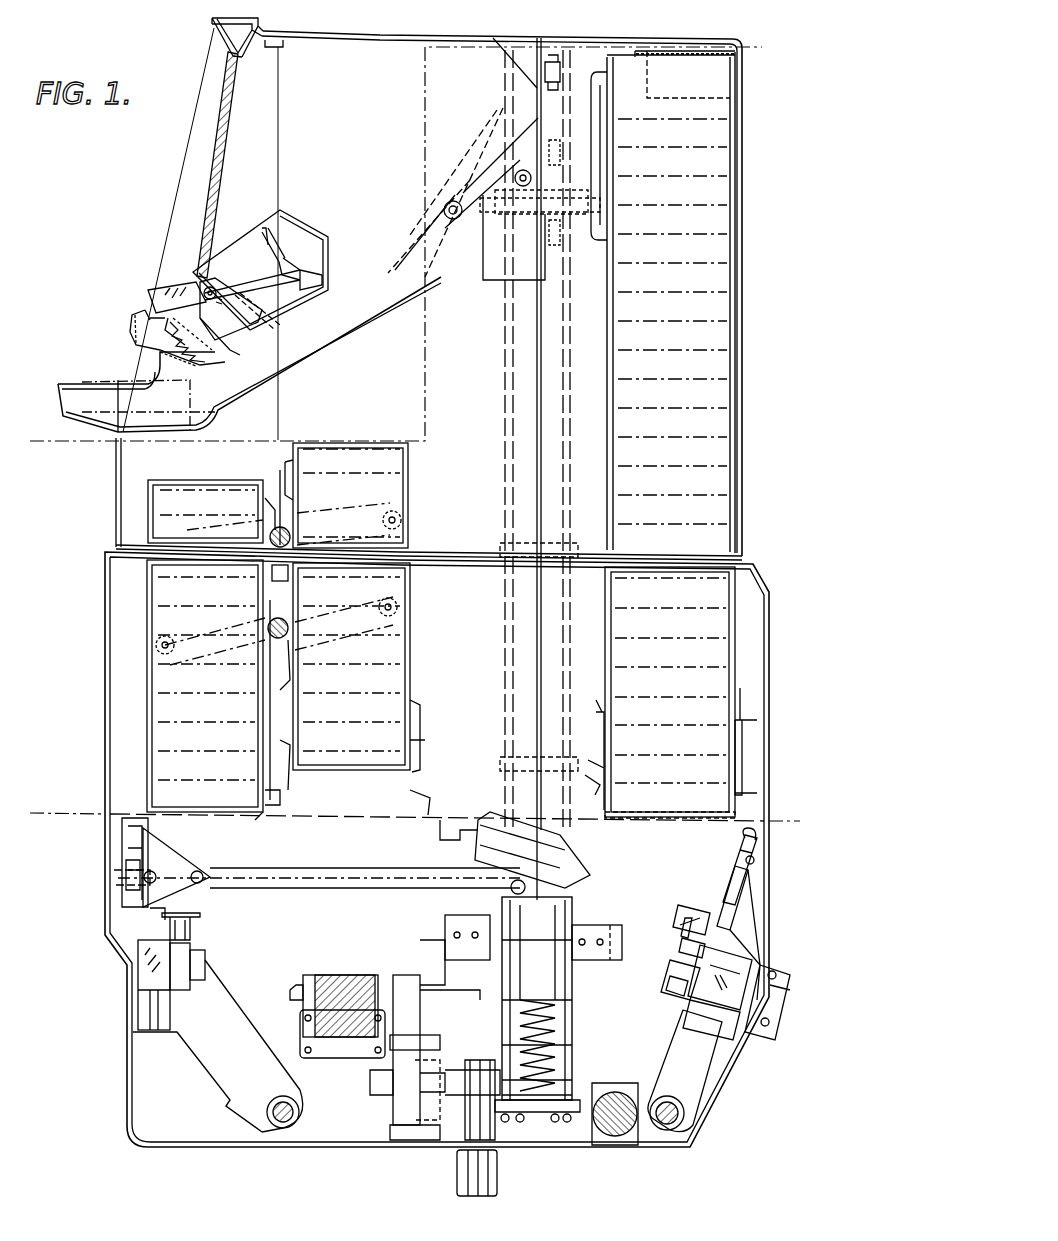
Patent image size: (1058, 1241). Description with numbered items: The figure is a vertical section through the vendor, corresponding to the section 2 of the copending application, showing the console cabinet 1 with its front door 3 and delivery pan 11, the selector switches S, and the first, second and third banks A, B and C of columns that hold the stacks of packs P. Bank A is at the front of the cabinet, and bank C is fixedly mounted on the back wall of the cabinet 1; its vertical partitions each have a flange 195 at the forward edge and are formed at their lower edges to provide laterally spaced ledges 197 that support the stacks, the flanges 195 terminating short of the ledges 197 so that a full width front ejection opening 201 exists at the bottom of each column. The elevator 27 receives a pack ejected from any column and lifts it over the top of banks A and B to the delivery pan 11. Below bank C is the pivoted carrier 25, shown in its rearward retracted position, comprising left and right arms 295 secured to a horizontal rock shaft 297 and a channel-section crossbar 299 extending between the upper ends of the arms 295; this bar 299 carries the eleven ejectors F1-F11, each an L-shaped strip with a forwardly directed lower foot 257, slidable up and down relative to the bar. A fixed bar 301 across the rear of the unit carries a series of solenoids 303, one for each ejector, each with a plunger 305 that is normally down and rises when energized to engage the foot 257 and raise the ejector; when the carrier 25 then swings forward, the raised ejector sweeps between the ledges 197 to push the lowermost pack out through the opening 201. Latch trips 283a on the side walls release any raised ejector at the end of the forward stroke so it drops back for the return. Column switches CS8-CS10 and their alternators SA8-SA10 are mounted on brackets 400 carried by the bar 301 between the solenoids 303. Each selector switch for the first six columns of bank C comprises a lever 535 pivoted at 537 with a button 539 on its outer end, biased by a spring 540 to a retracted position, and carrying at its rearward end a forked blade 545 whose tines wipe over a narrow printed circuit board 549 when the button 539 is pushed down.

The console cabinet 1 is at (350, 35).
The section line 2- 2 is at (48, 462).
The front door 3 is at (102, 612).
The delivery pan 11 is at (148, 414).
The pivoted carrier 25 is at (748, 932).
The elevator 27 is at (480, 815).
The flange 195 is at (607, 302).
The ledges 197 is at (615, 824).
The front ejection opening 201 is at (598, 788).
The lower foot 257 is at (682, 930).
The latch trips 283a is at (628, 925).
The arms 295 is at (666, 1072).
The rock shaft 297 is at (680, 1117).
The crossbar 299 is at (762, 880).
The fixed bar 301 is at (700, 1035).
The solenoids 303 is at (697, 1000).
The plunger 305 is at (684, 1030).
The bracket 400 is at (668, 986).
The lever 535 is at (242, 292).
The pivot 537 is at (212, 300).
The button 539 is at (178, 290).
The spring 540 is at (217, 340).
The forked blade 545 is at (280, 245).
The printed circuit board 549 is at (268, 240).
The selector switches S is at (142, 288).
The first bank of columns A is at (224, 485).
The second bank of columns B is at (368, 440).
The third bank of columns C is at (692, 48).
The packages P is at (674, 195).
The ejectors F1-F11 is at (735, 870).
The alternators SA8-SA10 is at (690, 905).
The column switches CS8-CS10 is at (666, 978).